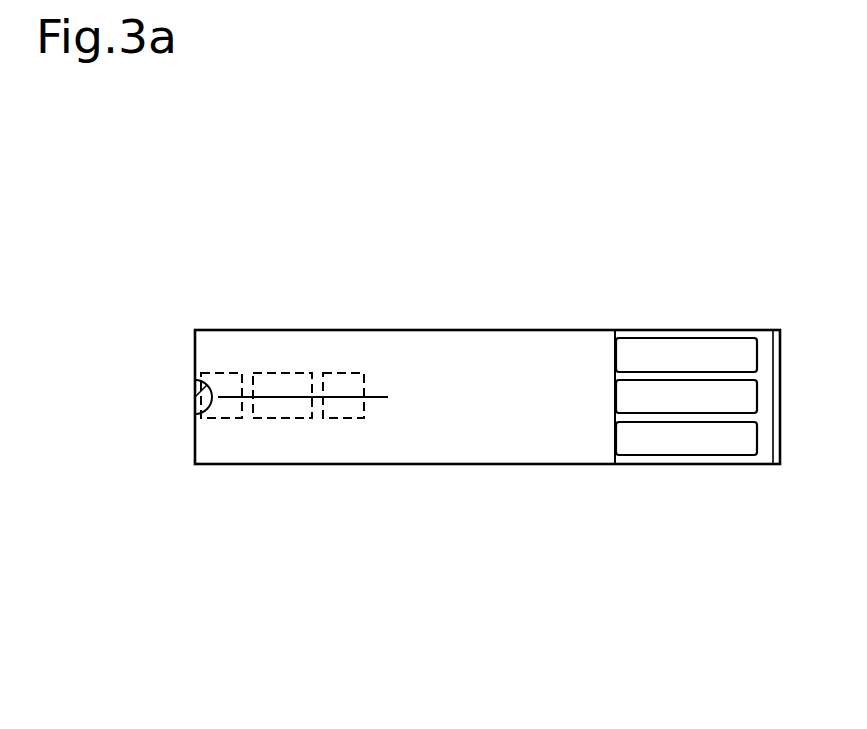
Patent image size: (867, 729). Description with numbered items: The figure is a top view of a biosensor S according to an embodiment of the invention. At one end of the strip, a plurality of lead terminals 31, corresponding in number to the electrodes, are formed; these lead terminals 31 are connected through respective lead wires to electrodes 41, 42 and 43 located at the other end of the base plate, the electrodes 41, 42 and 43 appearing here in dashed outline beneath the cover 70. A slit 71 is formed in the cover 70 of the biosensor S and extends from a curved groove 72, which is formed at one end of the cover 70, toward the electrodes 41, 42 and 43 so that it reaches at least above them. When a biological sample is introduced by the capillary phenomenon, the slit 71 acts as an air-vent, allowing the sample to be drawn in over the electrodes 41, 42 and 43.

The cover 70 is at (472, 443).
The lead terminals 31 is at (675, 353).
The curved groove 72 is at (197, 397).
The slit 71 is at (381, 397).
The electrode 43 is at (222, 420).
The electrode 41 is at (275, 420).
The electrode 42 is at (343, 420).
The biosensor S is at (590, 485).